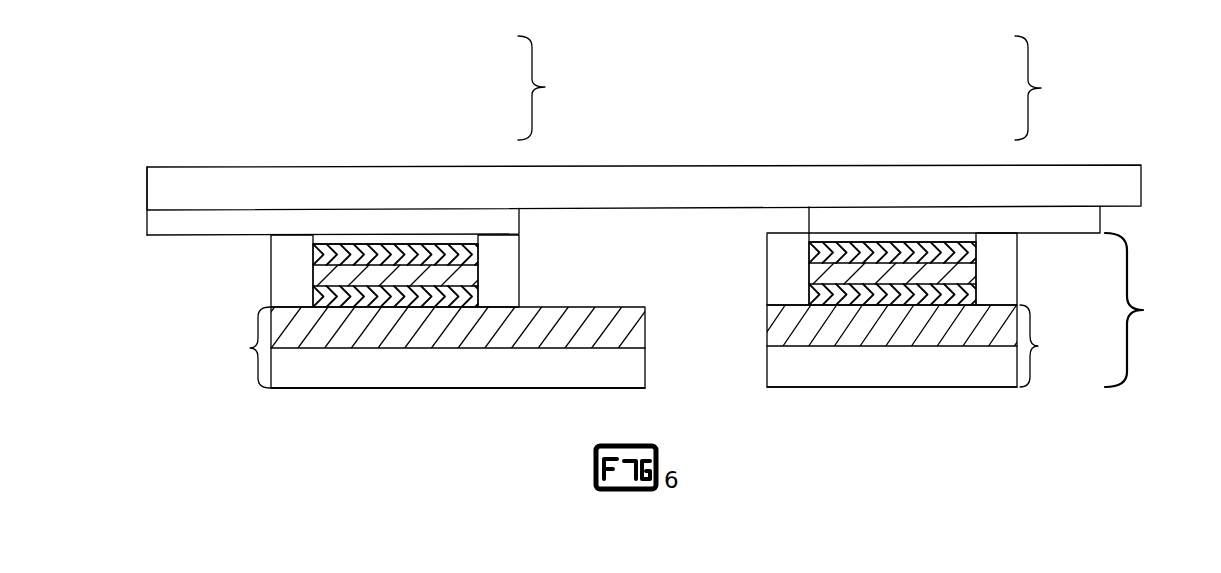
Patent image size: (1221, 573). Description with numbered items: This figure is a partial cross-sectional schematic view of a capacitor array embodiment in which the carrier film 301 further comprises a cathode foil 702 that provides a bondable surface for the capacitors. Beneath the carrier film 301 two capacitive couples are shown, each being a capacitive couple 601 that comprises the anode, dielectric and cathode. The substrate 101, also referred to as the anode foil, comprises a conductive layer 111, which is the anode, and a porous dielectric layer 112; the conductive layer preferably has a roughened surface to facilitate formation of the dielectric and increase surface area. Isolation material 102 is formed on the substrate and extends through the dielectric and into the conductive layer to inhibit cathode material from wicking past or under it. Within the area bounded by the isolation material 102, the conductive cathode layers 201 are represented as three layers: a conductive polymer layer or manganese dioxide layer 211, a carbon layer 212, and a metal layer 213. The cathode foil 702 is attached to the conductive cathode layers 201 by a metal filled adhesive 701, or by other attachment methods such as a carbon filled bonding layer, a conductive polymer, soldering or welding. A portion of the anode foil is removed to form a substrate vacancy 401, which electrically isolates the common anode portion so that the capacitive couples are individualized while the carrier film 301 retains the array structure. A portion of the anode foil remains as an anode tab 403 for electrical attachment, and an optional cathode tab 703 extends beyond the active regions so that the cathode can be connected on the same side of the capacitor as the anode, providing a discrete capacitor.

The carrier film 301 is at (670, 188).
The cathode foil 702 is at (318, 228).
The cathode tab 703 is at (147, 235).
The metal filled adhesive 701 is at (460, 240).
The conductive cathode layers 201 is at (701, 171).
The metal layer 213 is at (362, 247).
The carbon layer 212 is at (386, 278).
The conductive polymer layer or manganese dioxide layer 211 is at (416, 300).
The isolation material 102 is at (293, 295).
The substrate 101 is at (645, 346).
The porous dielectric layer 112 is at (450, 325).
The conductive layer 111 is at (310, 372).
The anode tab 403 is at (575, 388).
The substrate vacancy 401 is at (703, 362).
The capacitive couple 601 is at (1148, 310).